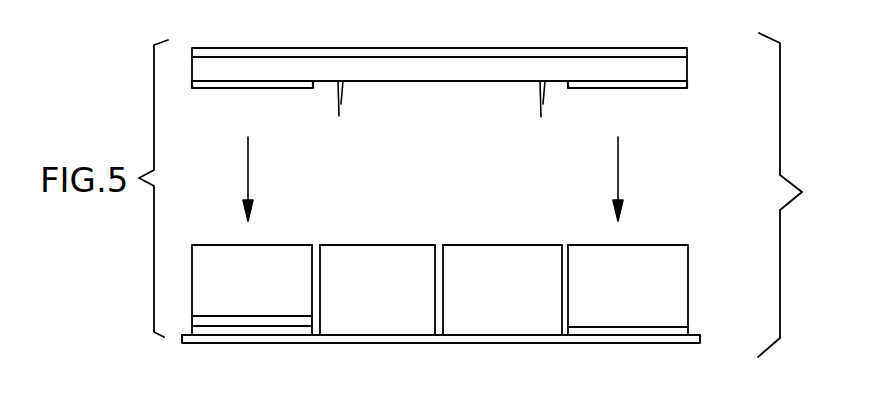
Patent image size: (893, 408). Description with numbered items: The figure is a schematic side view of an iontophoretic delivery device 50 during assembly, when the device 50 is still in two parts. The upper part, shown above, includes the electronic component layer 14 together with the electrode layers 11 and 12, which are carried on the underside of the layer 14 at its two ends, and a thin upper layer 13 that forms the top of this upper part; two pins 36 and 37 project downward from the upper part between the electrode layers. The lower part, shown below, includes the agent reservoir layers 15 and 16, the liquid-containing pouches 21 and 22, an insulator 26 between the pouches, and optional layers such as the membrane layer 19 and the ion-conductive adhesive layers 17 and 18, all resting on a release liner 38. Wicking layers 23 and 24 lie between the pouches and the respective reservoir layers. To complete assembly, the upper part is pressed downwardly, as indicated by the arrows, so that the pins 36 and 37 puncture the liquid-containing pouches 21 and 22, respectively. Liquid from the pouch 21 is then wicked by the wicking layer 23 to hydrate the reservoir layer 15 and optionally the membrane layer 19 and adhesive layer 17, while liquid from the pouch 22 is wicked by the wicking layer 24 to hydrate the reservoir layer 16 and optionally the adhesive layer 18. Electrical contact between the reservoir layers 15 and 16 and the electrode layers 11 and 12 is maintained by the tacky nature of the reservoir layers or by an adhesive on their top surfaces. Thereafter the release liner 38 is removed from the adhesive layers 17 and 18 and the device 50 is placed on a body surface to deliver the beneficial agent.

The electrode layer 11 is at (192, 82).
The electrode layer 12 is at (688, 88).
The top layer of cover plate 13 is at (650, 49).
The electronic component layer 14 is at (680, 70).
The agent reservoir layer 15 is at (218, 303).
The agent reservoir layer 16 is at (663, 310).
The ion-conductive adhesive layer 17 is at (280, 332).
The ion-conductive adhesive layer 18 is at (610, 332).
The membrane layer 19 is at (240, 322).
The liquid-containing pouch 21 is at (388, 320).
The liquid-containing pouch 22 is at (510, 312).
The wicking layer 23 is at (323, 318).
The wicking layer 24 is at (562, 312).
The insulator 26 is at (436, 320).
The pin 36 is at (343, 97).
The pin 37 is at (541, 103).
The release liner 38 is at (695, 334).
The iontophoretic delivery device 50 is at (798, 195).